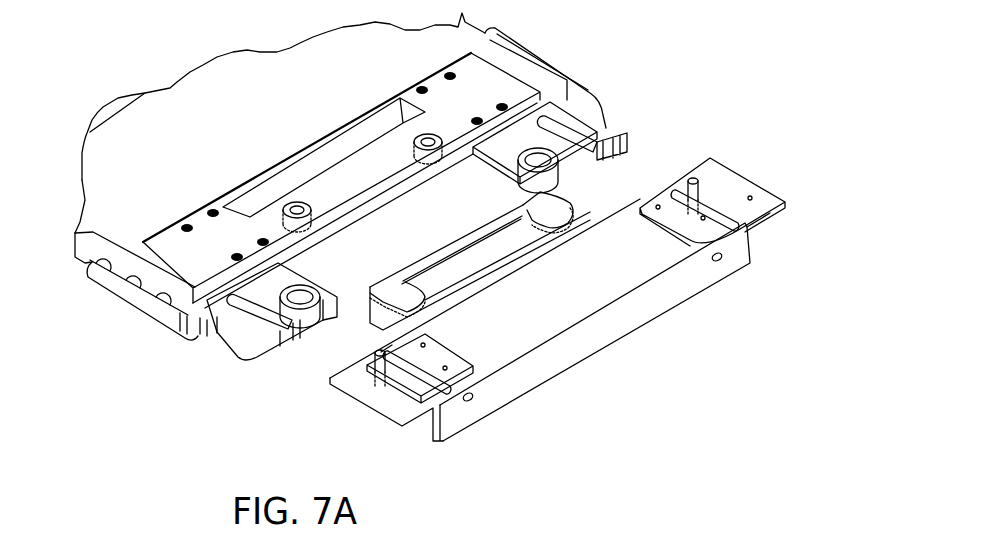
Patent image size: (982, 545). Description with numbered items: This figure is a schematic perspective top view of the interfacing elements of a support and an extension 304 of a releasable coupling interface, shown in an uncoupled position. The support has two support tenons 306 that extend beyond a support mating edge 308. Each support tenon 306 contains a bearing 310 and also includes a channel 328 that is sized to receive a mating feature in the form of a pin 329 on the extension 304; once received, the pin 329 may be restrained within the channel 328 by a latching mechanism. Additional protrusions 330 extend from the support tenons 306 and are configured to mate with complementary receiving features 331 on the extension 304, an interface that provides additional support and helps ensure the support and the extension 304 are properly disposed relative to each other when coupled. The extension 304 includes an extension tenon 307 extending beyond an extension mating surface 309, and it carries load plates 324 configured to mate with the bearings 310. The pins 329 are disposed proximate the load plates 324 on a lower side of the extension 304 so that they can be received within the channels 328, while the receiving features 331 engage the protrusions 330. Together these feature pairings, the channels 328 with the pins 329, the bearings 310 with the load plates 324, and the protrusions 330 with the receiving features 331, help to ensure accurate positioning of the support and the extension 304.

The extension 304 is at (753, 247).
The support tenon 306 is at (627, 160).
The extension tenon 307 is at (533, 203).
The support mating edge 308 is at (388, 197).
The extension mating surface 309 is at (385, 347).
The bearing 310 is at (427, 167).
The load plate 324 is at (470, 233).
The channel 328 is at (580, 133).
The mating feature (pin) 329 is at (712, 180).
The protrusion 330 is at (572, 182).
The receiving feature 331 is at (717, 262).